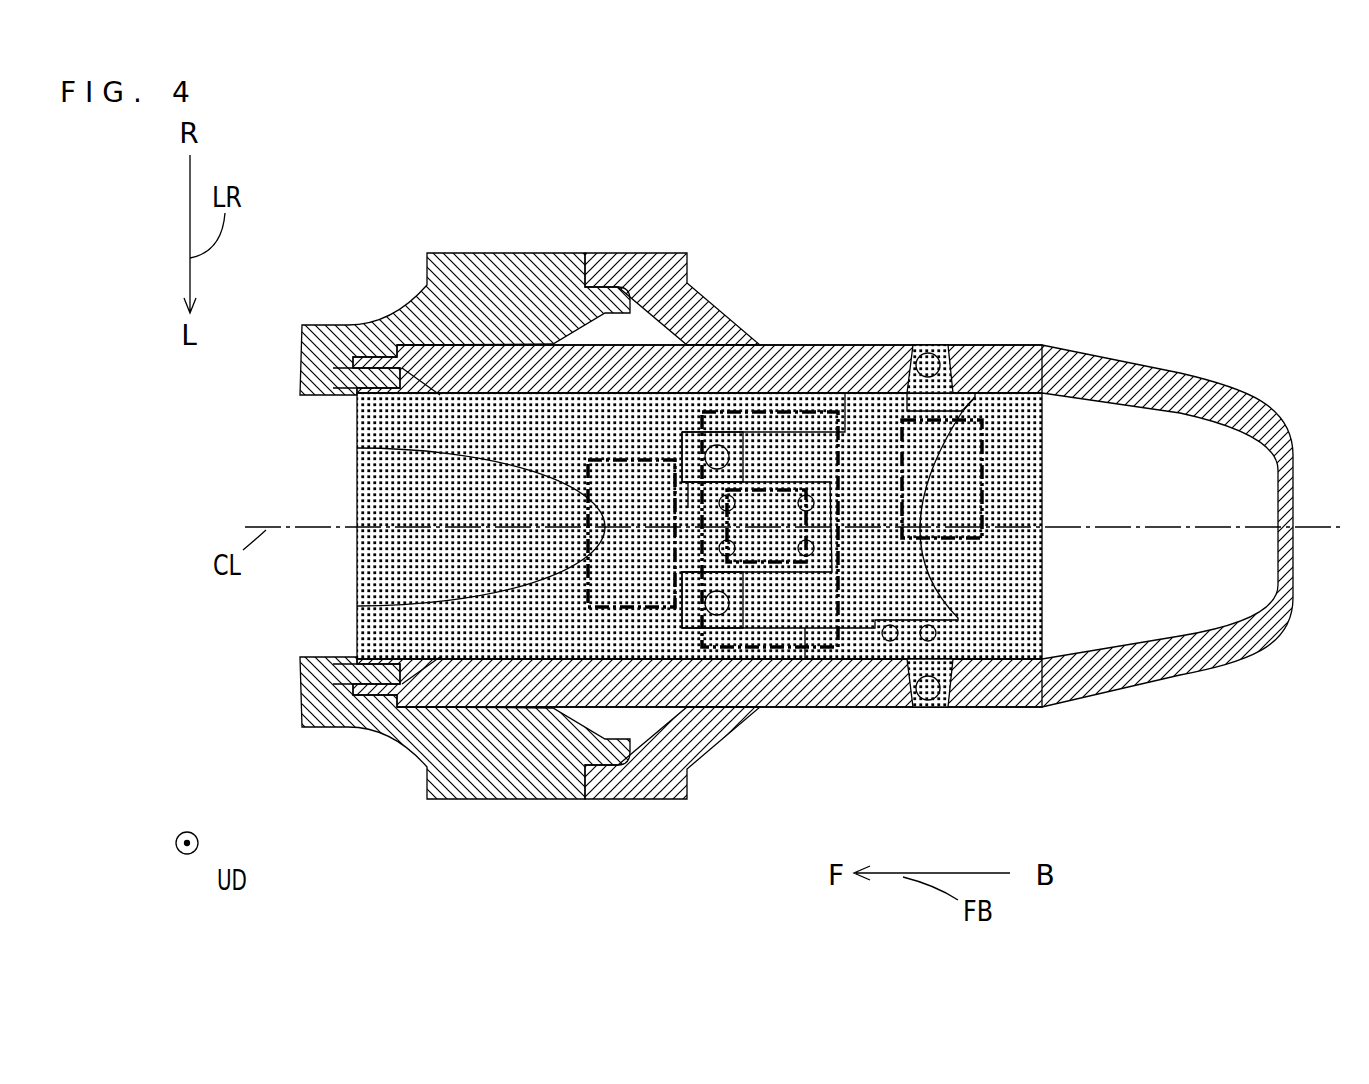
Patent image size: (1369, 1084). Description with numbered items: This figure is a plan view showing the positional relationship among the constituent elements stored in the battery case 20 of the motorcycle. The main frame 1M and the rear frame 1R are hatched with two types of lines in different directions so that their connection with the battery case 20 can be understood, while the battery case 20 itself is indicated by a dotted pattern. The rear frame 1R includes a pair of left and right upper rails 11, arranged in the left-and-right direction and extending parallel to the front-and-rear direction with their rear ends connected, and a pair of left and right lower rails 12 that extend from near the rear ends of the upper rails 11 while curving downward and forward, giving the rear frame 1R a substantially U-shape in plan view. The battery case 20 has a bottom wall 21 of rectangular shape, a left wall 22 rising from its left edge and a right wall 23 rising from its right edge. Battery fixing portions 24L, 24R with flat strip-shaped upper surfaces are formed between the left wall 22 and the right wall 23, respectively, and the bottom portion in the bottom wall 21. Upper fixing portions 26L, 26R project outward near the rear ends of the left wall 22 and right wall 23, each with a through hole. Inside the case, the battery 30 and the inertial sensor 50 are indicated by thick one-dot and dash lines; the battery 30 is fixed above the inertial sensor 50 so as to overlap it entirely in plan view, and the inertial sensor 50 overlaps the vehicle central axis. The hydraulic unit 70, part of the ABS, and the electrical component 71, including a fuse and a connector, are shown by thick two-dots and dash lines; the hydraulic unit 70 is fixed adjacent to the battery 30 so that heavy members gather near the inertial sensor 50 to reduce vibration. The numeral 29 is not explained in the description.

The main frame 1M is at (330, 343).
The rear frame 1R is at (1177, 385).
The upper rail 11 is at (1073, 375).
The lower rail 12 is at (675, 252).
The battery case 20 is at (1074, 496).
The bottom wall 21 is at (375, 480).
The left wall 22 is at (432, 657).
The right wall 23 is at (440, 393).
The battery fixing portion 24R is at (727, 408).
The battery fixing portion 24L is at (724, 640).
The upper fixing portion 26R is at (917, 345).
The upper fixing portion 26L is at (917, 707).
The wire 29 is at (600, 333).
The battery 30 is at (796, 408).
The inertial sensor 50 is at (778, 572).
The hydraulic unit 70 is at (618, 612).
The electrical component 71 is at (980, 392).